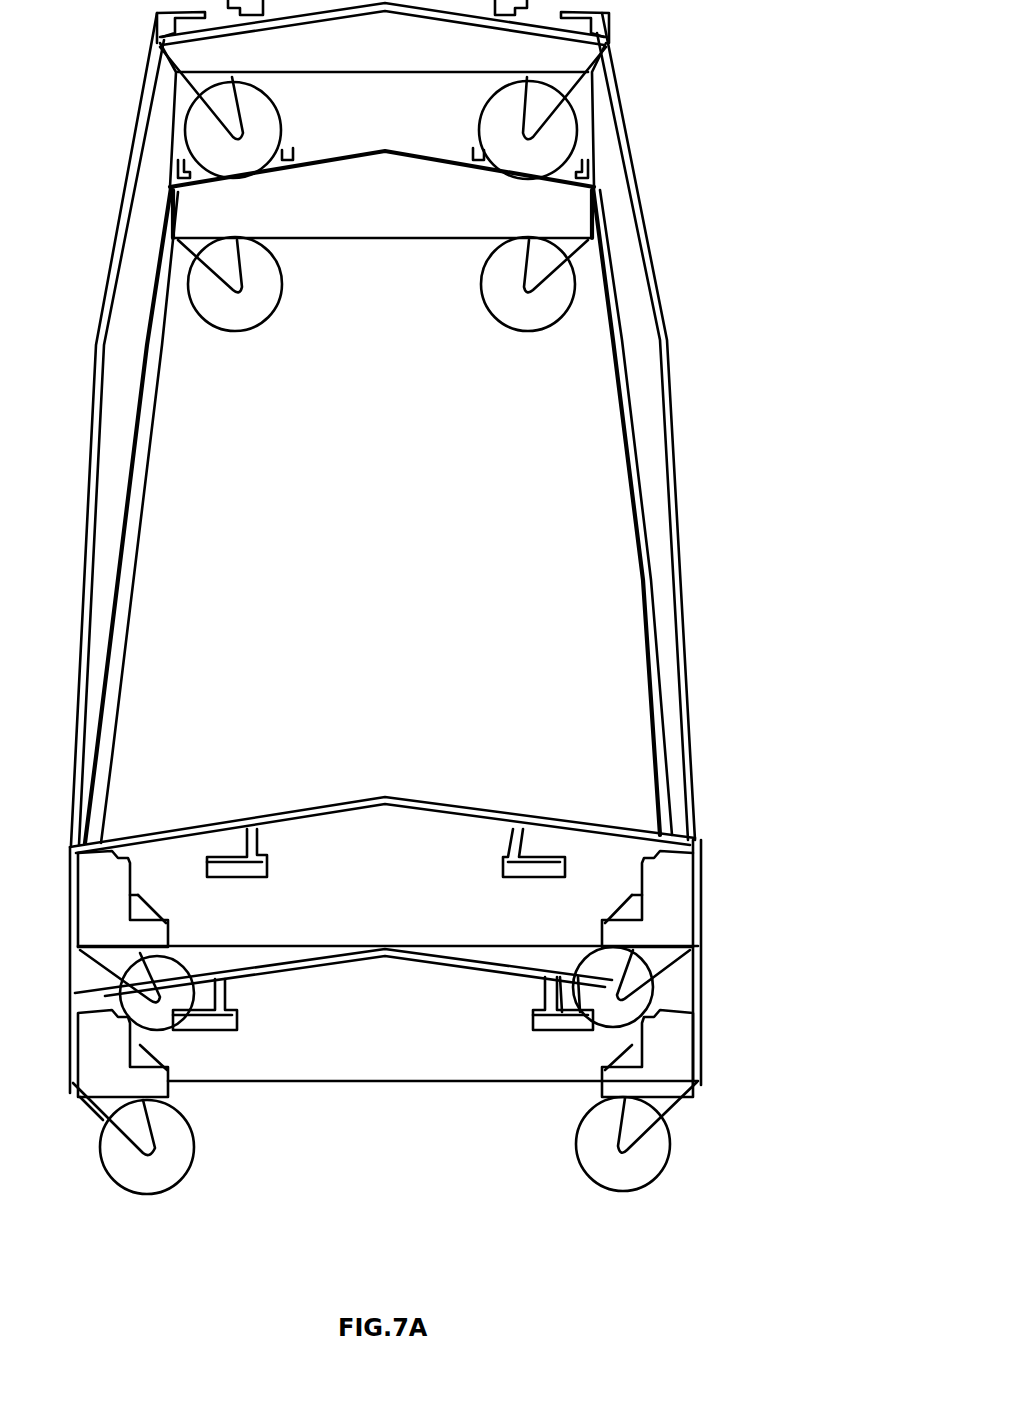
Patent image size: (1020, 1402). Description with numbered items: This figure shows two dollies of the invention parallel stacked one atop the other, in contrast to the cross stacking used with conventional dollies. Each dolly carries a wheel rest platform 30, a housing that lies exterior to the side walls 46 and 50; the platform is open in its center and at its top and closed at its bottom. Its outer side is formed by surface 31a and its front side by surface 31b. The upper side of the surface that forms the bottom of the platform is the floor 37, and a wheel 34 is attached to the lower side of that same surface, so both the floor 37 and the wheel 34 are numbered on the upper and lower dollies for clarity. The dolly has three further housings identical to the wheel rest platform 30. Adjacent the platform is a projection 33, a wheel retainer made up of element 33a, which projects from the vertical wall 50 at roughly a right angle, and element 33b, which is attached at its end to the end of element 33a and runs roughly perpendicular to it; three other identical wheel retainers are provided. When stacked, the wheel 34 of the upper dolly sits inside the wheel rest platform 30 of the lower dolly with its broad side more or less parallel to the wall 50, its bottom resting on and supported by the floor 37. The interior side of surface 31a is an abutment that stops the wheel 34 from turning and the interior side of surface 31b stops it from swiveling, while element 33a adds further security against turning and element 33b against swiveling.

The side wall 46 is at (665, 662).
The floor 37 is at (633, 1053).
The wheel rest platform 30 is at (667, 1037).
The outer side surface 31a is at (700, 1050).
The front side surface 31b is at (672, 1070).
The vertical wall 50 is at (253, 1045).
The wheel retainer element 33a is at (540, 982).
The projection 33 is at (530, 1035).
The wheel retainer element 33b is at (598, 1012).
The wheel 34 is at (622, 1052).